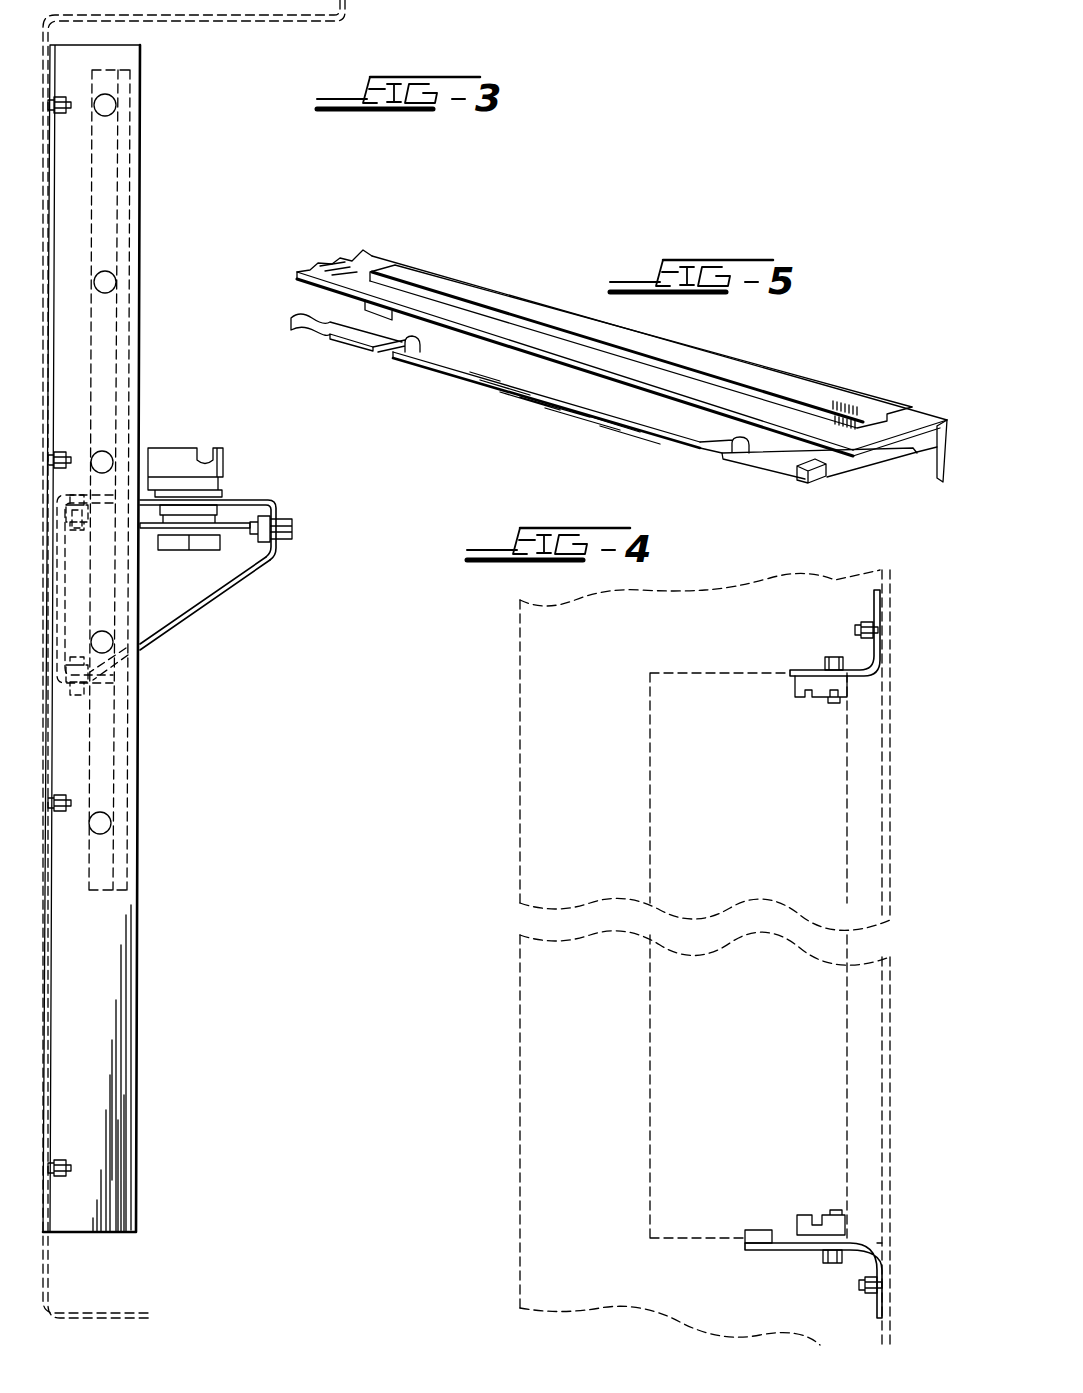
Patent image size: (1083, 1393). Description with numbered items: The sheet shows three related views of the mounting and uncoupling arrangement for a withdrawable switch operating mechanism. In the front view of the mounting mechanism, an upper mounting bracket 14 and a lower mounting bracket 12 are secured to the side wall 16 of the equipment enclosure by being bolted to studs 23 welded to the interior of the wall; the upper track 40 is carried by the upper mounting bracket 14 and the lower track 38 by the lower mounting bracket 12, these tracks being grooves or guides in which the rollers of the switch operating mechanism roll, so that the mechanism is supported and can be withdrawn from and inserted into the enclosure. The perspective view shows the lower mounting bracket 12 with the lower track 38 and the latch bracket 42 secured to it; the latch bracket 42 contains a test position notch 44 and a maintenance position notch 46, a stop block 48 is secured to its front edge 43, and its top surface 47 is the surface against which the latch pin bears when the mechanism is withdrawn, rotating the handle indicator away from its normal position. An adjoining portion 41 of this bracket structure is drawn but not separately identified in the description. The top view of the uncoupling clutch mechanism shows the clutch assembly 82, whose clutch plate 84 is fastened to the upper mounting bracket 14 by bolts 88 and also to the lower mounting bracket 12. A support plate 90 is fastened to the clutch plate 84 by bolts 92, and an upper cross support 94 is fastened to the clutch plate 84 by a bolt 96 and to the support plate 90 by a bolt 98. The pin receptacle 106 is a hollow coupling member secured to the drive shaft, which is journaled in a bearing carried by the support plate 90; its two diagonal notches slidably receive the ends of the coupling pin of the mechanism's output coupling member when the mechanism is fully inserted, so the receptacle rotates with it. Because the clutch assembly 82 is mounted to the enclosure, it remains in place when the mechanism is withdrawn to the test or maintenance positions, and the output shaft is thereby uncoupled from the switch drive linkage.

In FIG. 5, the lower mounting bracket 12 is at (373, 263).
In FIG. 4, the lower mounting bracket 12 is at (883, 1243).
In FIG. 3, the upper mounting bracket 14 is at (107, 1122).
In FIG. 4, the upper mounting bracket 14 is at (865, 670).
In FIG. 4, the side wall 16 is at (882, 785).
In FIG. 3, the studs 23 is at (74, 105).
In FIG. 4, the studs 23 is at (862, 625).
In FIG. 5, the lower track 38 is at (435, 282).
In FIG. 4, the lower track 38 is at (812, 1223).
In FIG. 4, the upper track 40 is at (817, 690).
In FIG. 5, the bracket 41 is at (332, 324).
In FIG. 4, the latch bracket 42 is at (777, 1251).
In FIG. 5, the front edge 43 is at (863, 463).
In FIG. 5, the test position notch 44 is at (414, 352).
In FIG. 5, the maintenance position notch 46 is at (743, 453).
In FIG. 5, the top surface 47 is at (597, 400).
In FIG. 5, the stop block 48 is at (810, 478).
In FIG. 4, the stop block 48 is at (757, 1228).
In FIG. 3, the clutch assembly 82 is at (244, 424).
In FIG. 3, the clutch plate 84 is at (58, 623).
In FIG. 3, the bolts 88 is at (66, 537).
In FIG. 3, the support plate 90 is at (252, 500).
In FIG. 3, the bolts 92 is at (86, 492).
In FIG. 3, the upper cross support 94 is at (212, 598).
In FIG. 3, the bolt 96 is at (72, 700).
In FIG. 3, the bolt 98 is at (296, 525).
In FIG. 3, the pin receptacle 106 is at (178, 458).